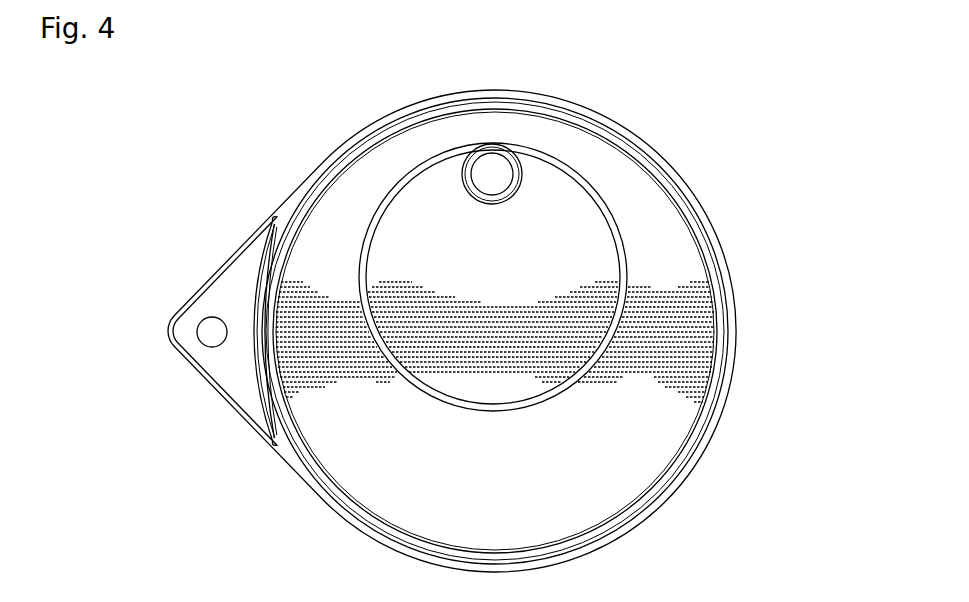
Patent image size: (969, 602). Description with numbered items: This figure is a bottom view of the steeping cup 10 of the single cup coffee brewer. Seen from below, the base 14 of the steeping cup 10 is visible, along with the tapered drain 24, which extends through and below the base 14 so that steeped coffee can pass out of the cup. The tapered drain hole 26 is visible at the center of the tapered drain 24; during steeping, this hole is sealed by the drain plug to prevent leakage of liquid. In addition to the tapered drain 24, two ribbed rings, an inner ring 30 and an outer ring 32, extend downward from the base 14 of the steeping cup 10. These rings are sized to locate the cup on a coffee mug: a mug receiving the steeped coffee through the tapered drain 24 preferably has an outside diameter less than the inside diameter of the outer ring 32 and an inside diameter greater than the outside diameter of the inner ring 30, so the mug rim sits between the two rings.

The steeping cup 10 is at (748, 110).
The base 14 is at (450, 480).
The tapered drain 24 is at (462, 160).
The tapered drain hole 26 is at (492, 172).
The inner ring 30 is at (620, 273).
The outer ring 32 is at (670, 475).